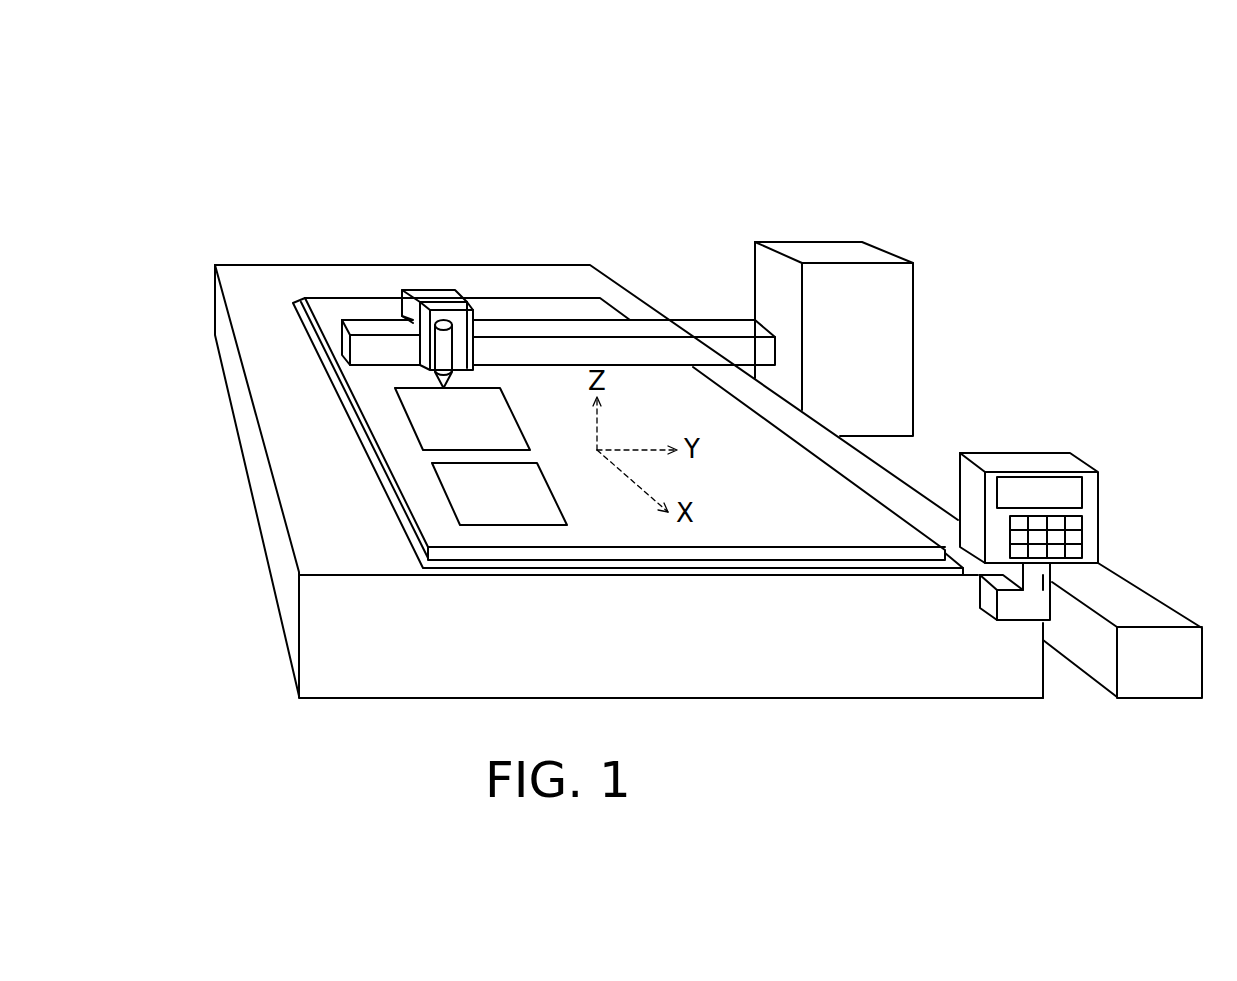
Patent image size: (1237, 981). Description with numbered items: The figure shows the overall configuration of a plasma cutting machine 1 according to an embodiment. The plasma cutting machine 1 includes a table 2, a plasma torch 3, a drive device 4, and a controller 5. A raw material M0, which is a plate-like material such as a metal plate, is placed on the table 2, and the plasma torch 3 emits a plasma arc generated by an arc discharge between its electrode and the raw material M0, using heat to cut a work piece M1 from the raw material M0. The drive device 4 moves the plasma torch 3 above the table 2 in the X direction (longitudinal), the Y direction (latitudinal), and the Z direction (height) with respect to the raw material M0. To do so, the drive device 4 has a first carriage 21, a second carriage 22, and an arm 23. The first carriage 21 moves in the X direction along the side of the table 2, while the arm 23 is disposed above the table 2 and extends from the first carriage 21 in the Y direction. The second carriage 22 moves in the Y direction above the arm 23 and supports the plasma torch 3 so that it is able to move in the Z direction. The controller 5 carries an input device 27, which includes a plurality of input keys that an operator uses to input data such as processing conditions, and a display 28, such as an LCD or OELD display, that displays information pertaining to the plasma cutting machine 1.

The plasma cutting machine 1 is at (743, 143).
The table 2 is at (520, 278).
The plasma torch 3 is at (443, 350).
The drive device 4 is at (550, 285).
The controller 5 is at (1071, 465).
The first carriage 21 is at (830, 243).
The second carriage 22 is at (433, 290).
The arm 23 is at (492, 322).
The input device 27 is at (1075, 535).
The display 28 is at (1040, 487).
The raw material M0 is at (360, 300).
The work piece M1 is at (437, 422).